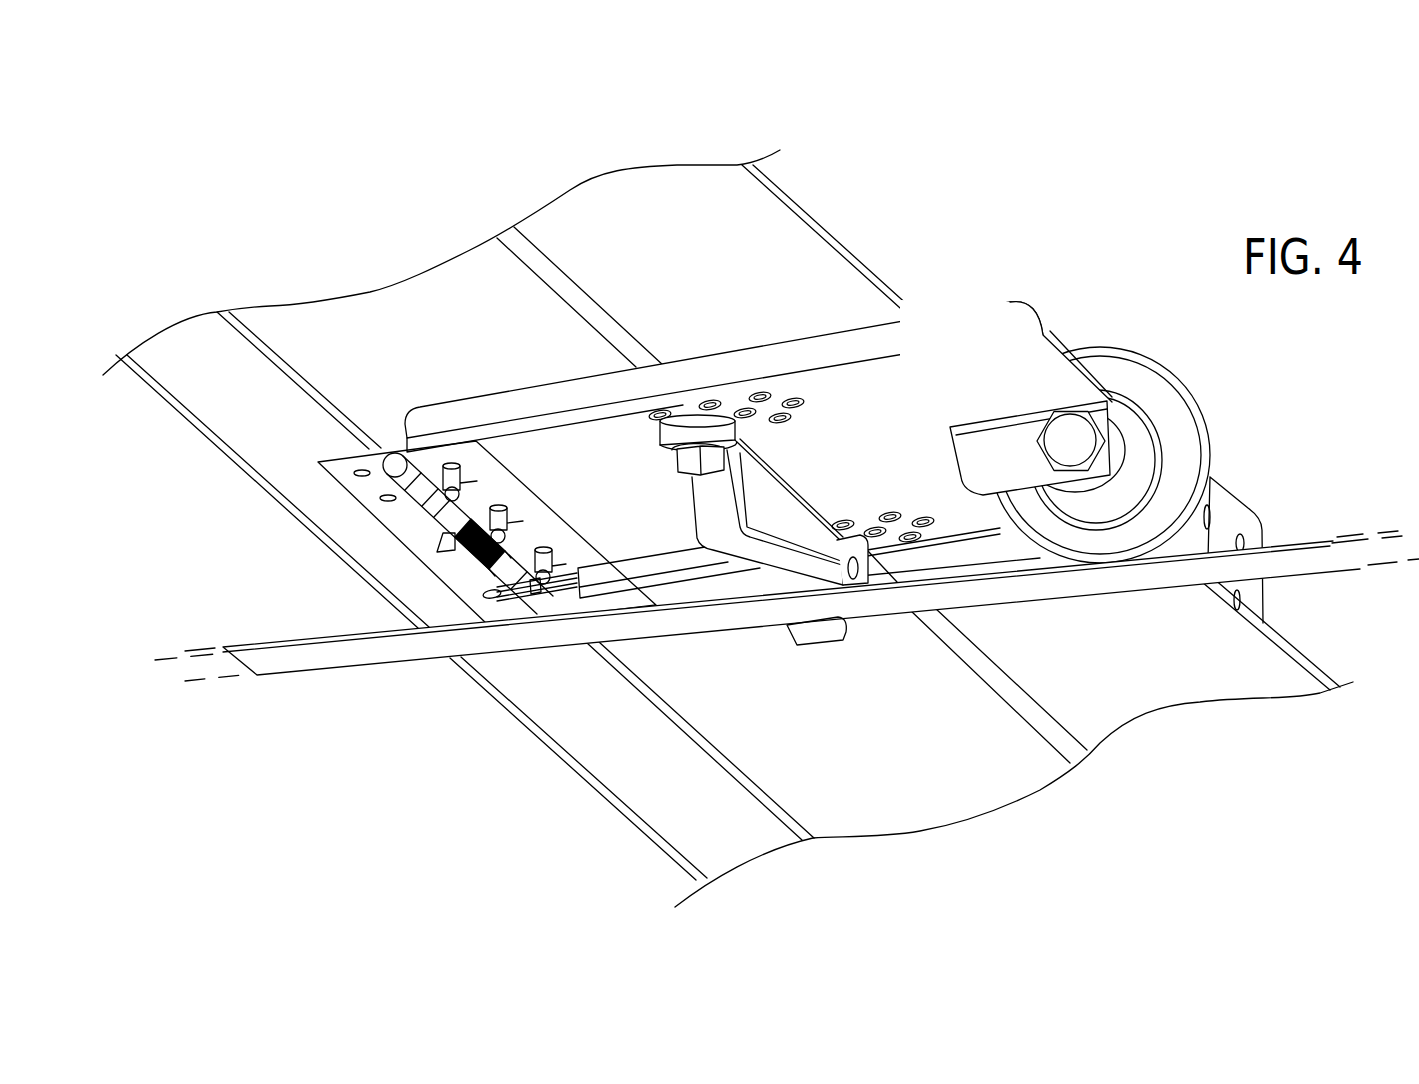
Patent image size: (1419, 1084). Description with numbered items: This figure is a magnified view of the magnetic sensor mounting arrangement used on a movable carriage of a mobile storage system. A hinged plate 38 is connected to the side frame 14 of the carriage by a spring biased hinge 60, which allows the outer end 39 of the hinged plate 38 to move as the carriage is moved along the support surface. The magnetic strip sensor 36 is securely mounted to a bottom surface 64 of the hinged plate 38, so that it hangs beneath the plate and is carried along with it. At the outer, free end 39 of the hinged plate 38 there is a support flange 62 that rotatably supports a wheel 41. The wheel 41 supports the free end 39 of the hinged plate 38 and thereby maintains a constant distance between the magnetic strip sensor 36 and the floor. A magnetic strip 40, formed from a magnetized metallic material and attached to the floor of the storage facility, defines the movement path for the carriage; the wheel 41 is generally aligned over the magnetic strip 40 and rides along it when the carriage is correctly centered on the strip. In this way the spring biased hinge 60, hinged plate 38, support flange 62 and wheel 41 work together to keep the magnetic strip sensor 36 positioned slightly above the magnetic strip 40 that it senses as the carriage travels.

The side frame 14 is at (618, 750).
The magnetic strip sensor 36 is at (788, 512).
The hinged plate 38 is at (712, 372).
The outer, free end 39 is at (1060, 350).
The magnetic strip 40 is at (371, 657).
The wheel 41 is at (1170, 413).
The spring biased hinge 60 is at (343, 468).
The support flange 62 is at (1005, 445).
The bottom surface 64 is at (963, 378).